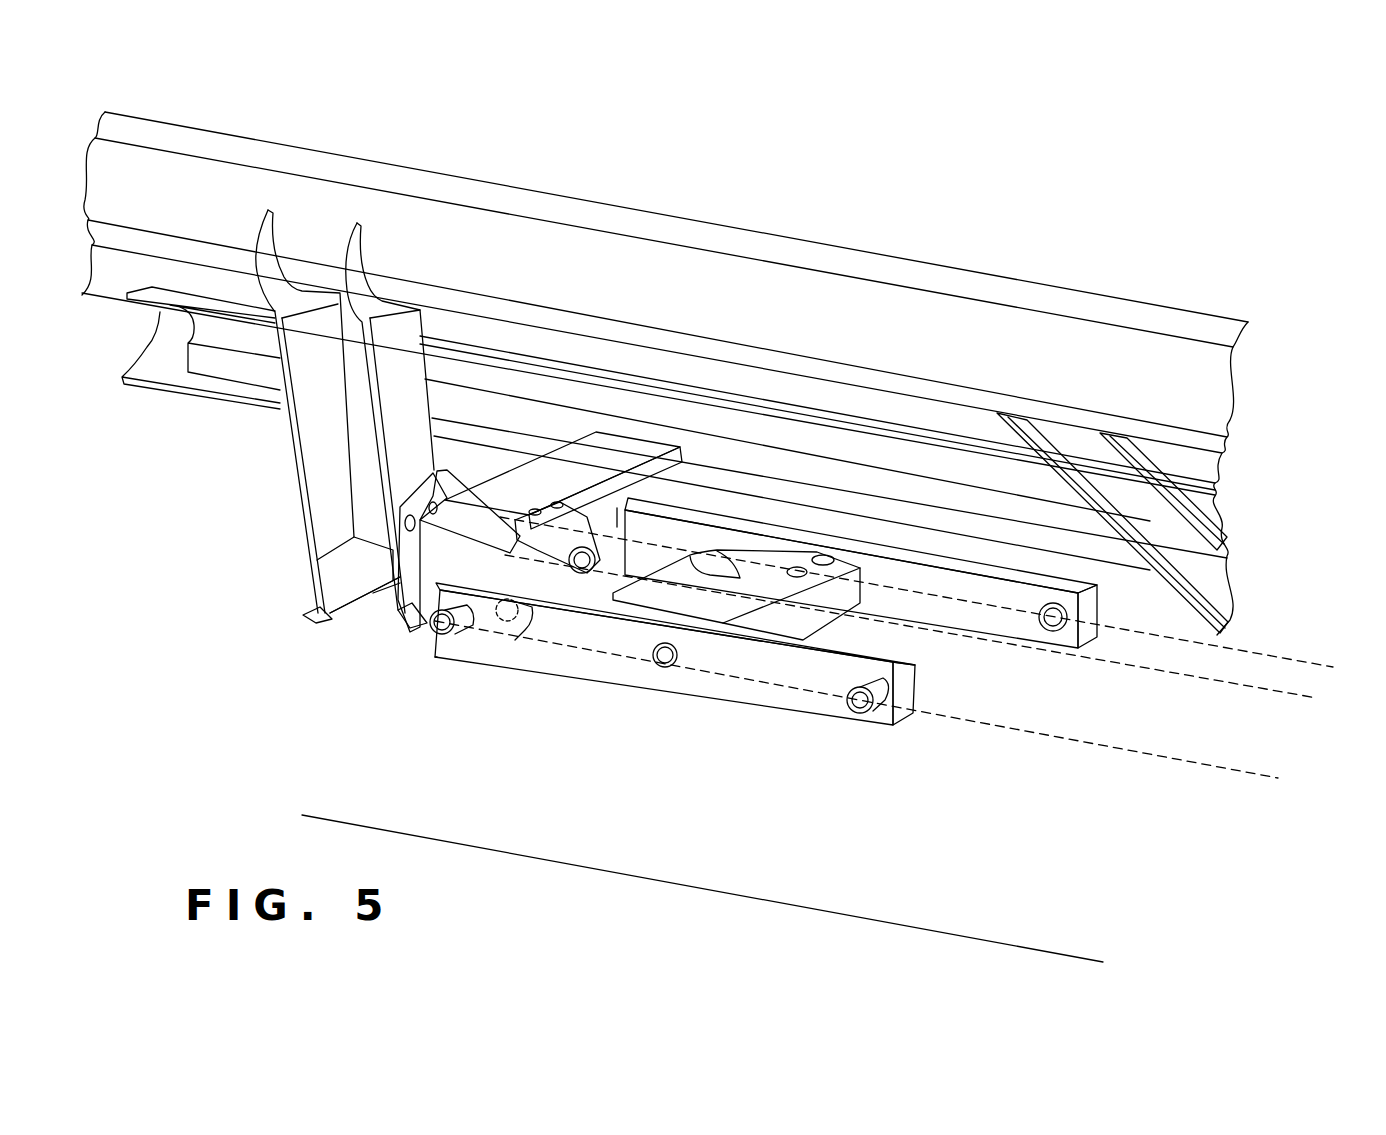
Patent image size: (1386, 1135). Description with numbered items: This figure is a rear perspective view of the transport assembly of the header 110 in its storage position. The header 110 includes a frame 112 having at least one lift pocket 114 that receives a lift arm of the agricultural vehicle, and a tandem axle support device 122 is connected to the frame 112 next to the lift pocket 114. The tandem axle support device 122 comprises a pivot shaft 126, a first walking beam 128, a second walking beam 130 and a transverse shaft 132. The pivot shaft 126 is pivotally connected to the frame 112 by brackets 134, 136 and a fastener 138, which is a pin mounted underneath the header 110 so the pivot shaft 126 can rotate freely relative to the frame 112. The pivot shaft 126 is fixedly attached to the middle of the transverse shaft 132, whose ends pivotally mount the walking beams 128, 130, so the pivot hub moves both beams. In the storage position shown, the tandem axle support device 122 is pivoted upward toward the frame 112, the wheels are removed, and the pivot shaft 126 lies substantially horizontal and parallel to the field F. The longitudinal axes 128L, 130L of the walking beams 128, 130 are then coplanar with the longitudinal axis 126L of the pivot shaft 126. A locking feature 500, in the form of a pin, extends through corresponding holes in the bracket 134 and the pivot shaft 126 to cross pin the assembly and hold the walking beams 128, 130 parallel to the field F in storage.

The header 110 is at (947, 205).
The frame 112 is at (297, 468).
The lift pocket 114 is at (352, 634).
The tandem axle support device 122 is at (510, 716).
The pivot shaft 126 is at (657, 565).
The first walking beam 128 is at (822, 725).
The second walking beam 130 is at (942, 560).
The transverse shaft 132 is at (860, 620).
The bracket 134 is at (430, 658).
The bracket 136 is at (570, 510).
The fastener 138 is at (605, 515).
The locking feature 500 is at (527, 635).
The longitudinal axis of the second walking beam 130L is at (1275, 657).
The longitudinal axis of the pivot shaft 126L is at (1282, 700).
The longitudinal axis of the first walking beam 128L is at (1219, 768).
The field F is at (845, 915).